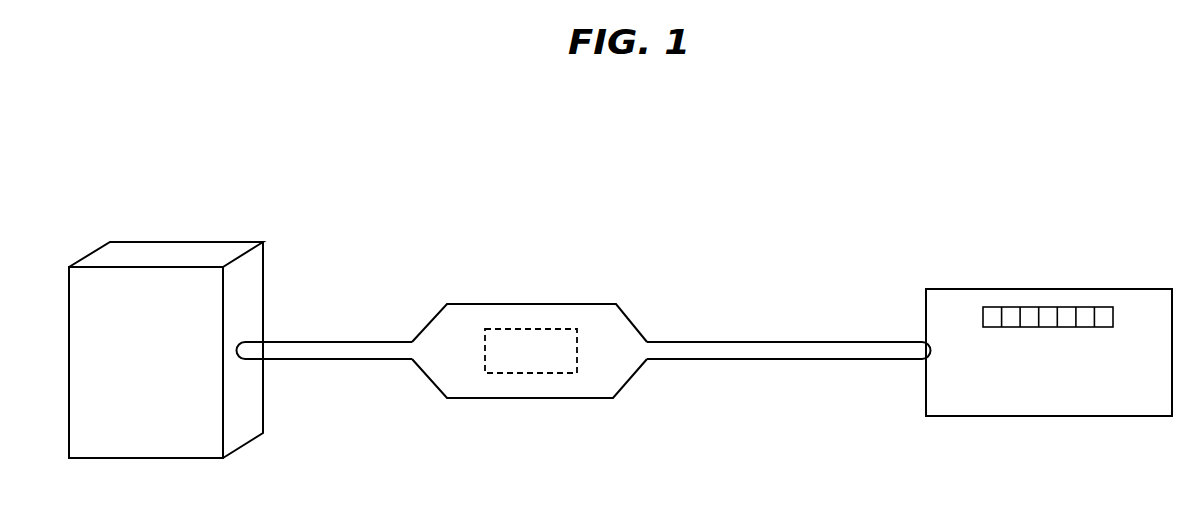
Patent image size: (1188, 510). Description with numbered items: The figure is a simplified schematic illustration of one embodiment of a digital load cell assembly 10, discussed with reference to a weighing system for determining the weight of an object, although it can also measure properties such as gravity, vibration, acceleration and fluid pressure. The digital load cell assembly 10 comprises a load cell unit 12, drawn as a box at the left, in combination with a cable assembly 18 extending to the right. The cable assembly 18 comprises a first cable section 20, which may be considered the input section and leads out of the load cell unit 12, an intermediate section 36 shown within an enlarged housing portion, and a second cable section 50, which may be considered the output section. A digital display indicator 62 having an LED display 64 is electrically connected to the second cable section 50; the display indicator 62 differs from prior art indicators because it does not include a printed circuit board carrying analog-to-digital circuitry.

The digital load cell assembly 10 is at (252, 145).
The load cell unit 12 is at (163, 250).
The cable assembly 18 is at (590, 245).
The first cable section 20 is at (345, 350).
The intermediate section 36 is at (560, 373).
The second cable section 50 is at (785, 350).
The digital display indicator 62 is at (1118, 290).
The LED display 64 is at (1026, 328).